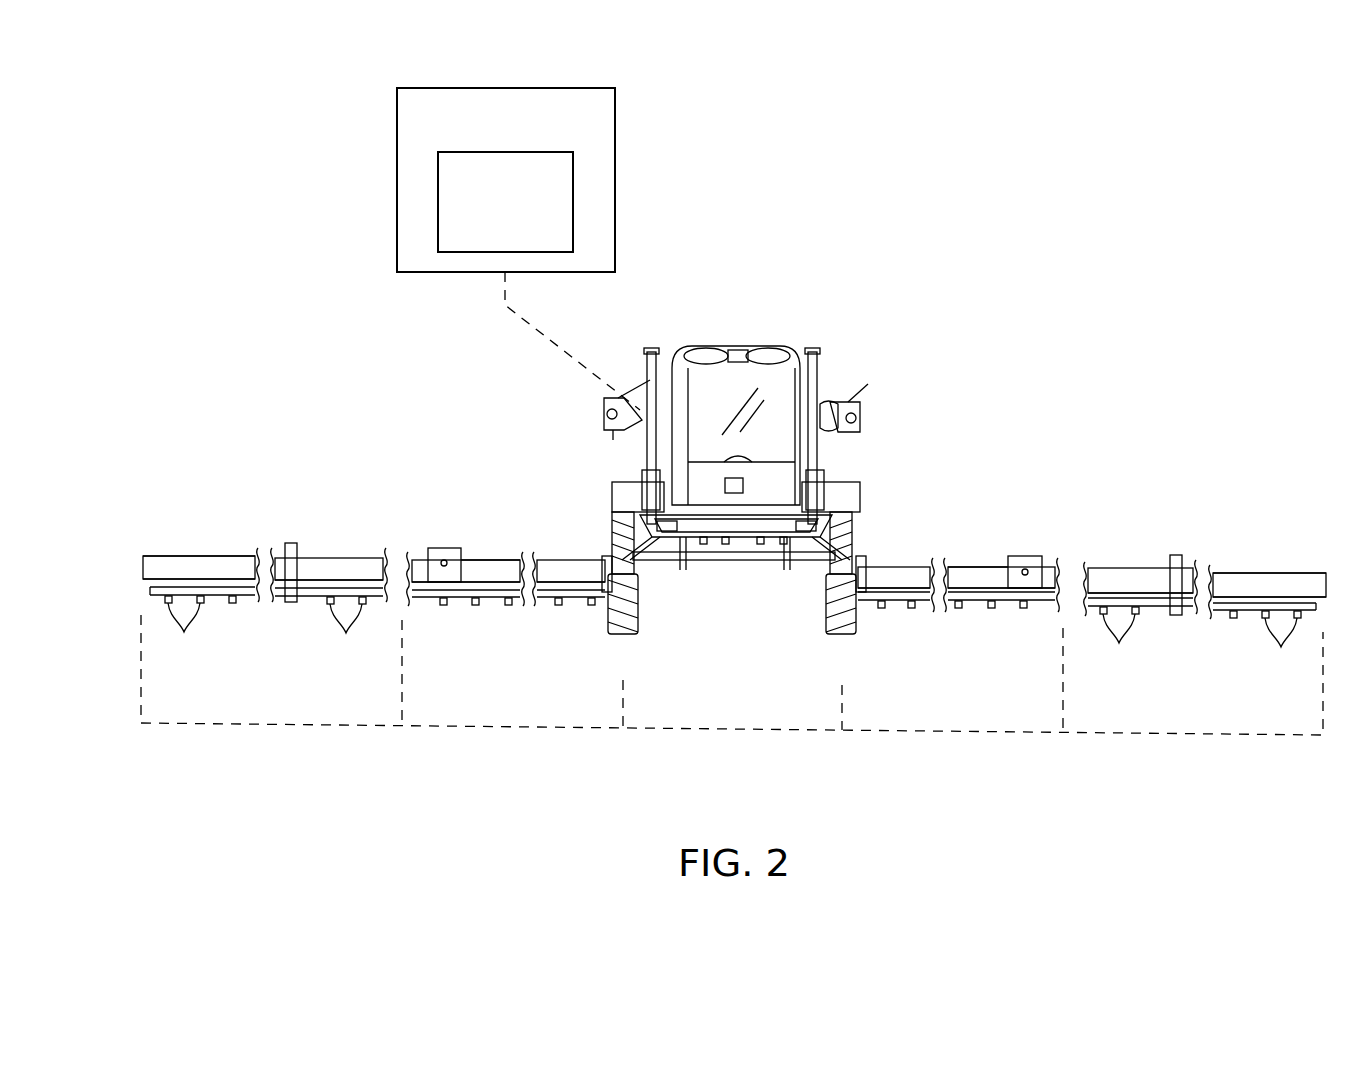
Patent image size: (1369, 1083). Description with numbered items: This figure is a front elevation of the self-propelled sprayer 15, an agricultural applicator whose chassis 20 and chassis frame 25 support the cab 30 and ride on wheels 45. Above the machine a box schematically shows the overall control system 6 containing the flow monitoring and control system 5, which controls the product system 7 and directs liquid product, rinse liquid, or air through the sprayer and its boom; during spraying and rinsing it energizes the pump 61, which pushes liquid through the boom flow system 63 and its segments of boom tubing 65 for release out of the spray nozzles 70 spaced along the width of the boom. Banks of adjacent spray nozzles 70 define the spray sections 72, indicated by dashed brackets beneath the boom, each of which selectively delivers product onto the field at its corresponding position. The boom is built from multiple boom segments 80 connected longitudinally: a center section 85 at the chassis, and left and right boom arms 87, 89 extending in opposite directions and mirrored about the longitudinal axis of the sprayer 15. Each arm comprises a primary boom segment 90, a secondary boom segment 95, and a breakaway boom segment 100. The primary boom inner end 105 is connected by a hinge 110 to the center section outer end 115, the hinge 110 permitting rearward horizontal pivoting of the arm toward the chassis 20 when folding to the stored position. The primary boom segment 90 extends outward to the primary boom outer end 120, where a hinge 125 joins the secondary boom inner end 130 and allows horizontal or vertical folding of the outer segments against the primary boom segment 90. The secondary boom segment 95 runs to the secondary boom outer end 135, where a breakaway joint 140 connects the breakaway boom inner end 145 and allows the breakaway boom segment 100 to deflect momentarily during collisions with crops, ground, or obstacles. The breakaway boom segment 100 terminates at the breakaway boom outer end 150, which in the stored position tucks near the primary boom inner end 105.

The flow monitoring and control system 5 is at (438, 200).
The control system 6 is at (506, 88).
The product system 7 is at (965, 562).
The self-propelled sprayer 15 is at (790, 198).
The chassis 20 is at (775, 548).
The chassis frame 25 is at (752, 512).
The cab 30 is at (720, 337).
The wheels 45 is at (628, 635).
The pump 61 is at (724, 487).
The boom flow system 63 is at (568, 618).
The boom tubing 65 is at (918, 592).
The spray nozzles 70 is at (1000, 678).
The spray sections 72 is at (216, 697).
The boom segments 80 is at (195, 522).
The center section 85 is at (728, 577).
The left boom arm 87 is at (1262, 450).
The right boom arm 89 is at (440, 428).
The primary boom segment 90 is at (562, 512).
The secondary boom segment 95 is at (348, 505).
The breakaway boom segment 100 is at (215, 530).
The primary boom inner end 105 is at (552, 572).
The hinge 110 is at (606, 592).
The center section outer end 115 is at (856, 512).
The primary boom outer end 120 is at (488, 572).
The hinge 125 is at (445, 578).
The secondary boom inner end 130 is at (414, 560).
The secondary boom outer end 135 is at (304, 568).
The breakaway joint 140 is at (289, 602).
The breakaway boom inner end 145 is at (283, 552).
The breakaway boom outer end 150 is at (146, 556).